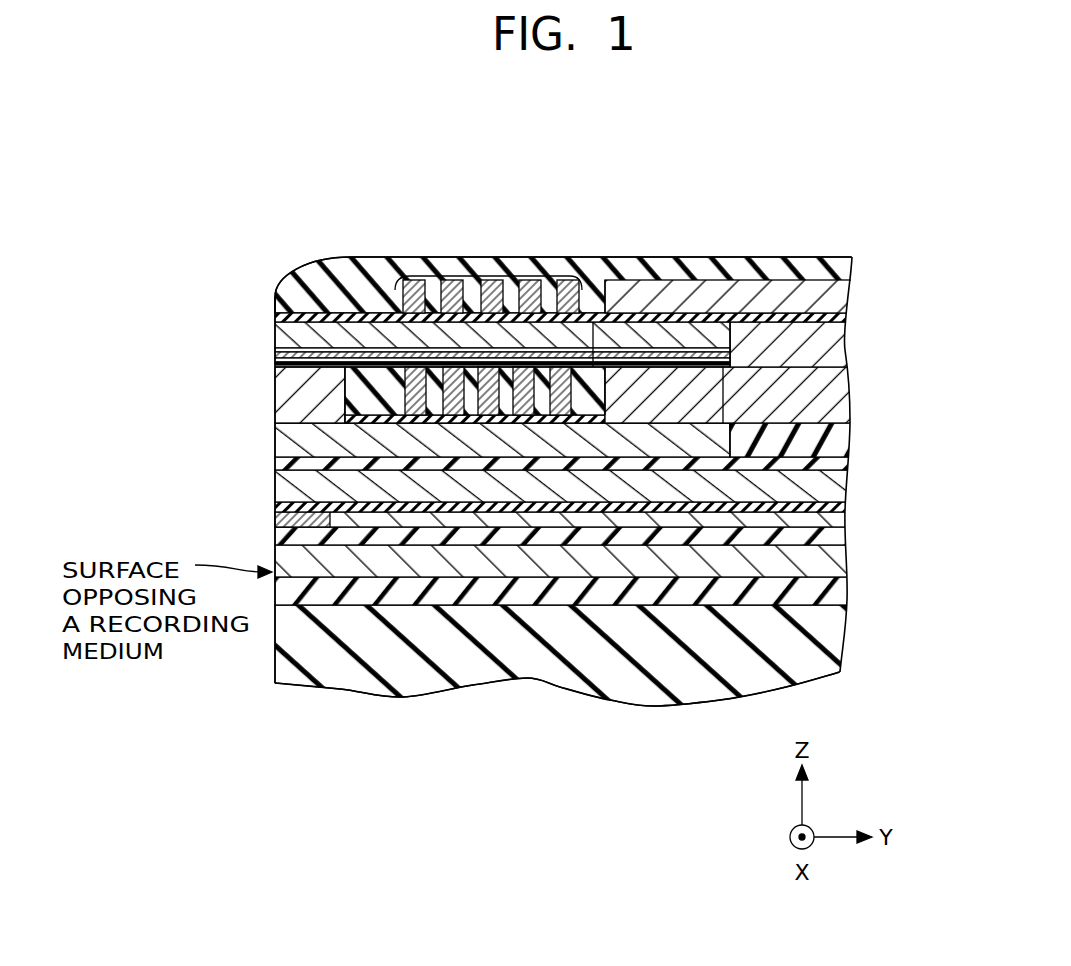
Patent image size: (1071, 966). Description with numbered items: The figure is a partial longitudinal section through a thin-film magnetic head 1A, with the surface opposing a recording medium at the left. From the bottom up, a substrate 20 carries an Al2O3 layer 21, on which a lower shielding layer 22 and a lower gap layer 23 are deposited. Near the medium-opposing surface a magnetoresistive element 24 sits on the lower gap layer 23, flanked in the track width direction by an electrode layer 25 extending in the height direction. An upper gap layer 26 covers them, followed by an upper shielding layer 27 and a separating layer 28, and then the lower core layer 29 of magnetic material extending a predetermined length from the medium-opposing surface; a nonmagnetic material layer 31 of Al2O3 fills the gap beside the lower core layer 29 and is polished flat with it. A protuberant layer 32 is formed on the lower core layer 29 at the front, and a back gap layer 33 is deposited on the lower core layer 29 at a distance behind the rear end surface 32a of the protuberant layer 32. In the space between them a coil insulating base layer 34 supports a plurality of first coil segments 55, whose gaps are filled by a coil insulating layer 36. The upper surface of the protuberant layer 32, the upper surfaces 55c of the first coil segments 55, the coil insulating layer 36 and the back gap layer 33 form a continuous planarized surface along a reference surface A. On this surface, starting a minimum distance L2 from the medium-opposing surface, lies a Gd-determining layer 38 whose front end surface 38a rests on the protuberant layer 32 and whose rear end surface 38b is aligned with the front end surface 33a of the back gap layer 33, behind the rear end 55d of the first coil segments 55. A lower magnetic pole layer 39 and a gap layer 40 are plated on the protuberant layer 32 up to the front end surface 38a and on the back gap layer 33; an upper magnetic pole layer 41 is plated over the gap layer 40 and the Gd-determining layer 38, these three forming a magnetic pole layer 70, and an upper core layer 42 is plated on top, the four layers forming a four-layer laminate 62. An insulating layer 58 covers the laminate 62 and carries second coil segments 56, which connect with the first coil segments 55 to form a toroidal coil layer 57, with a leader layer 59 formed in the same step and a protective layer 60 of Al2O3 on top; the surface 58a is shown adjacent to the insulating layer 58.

The thin-film magnetic head 1A is at (824, 162).
The substrate 20 is at (838, 632).
The Al2O3 layer 21 is at (848, 602).
The lower shielding layer 22 is at (848, 592).
The lower gap layer 23 is at (848, 556).
The magnetoresistive element 24 is at (280, 527).
The electrode layer 25 is at (848, 522).
The upper gap layer 26 is at (848, 508).
The upper shielding layer 27 is at (848, 490).
The separating layer 28 is at (848, 466).
The lower core layer 29 is at (290, 477).
The nonmagnetic material layer 31 is at (848, 440).
The protuberant layer 32 is at (285, 440).
The rear end surface 32a is at (330, 445).
The back gap layer 33 is at (703, 405).
The front end surface 33a is at (640, 400).
The coil insulating base layer 34 is at (590, 395).
The coil insulating layer 36 is at (593, 322).
The Gd-determining layer 38 is at (365, 400).
The front end surface 38a is at (285, 395).
The rear end surface 38b is at (722, 373).
The lower magnetic pole layer 39 is at (266, 368).
The gap layer 40 is at (273, 358).
The upper magnetic pole layer 41 is at (273, 348).
The upper core layer 42 is at (273, 332).
The first coil segments 55 is at (353, 258).
The upper surfaces 55c is at (561, 405).
The rear end 55d is at (603, 400).
The second coil segments 56 is at (487, 280).
The toroidal coil layer 57 is at (520, 250).
The insulating layer 58 is at (720, 300).
The top surface 58a is at (745, 322).
The leader layer 59 is at (832, 300).
The protective layer 60 is at (655, 265).
The four-layer laminate 62 is at (127, 256).
The magnetic pole layer 70 is at (178, 300).
The reference surface A is at (262, 370).
The minimum distance L2 is at (313, 350).